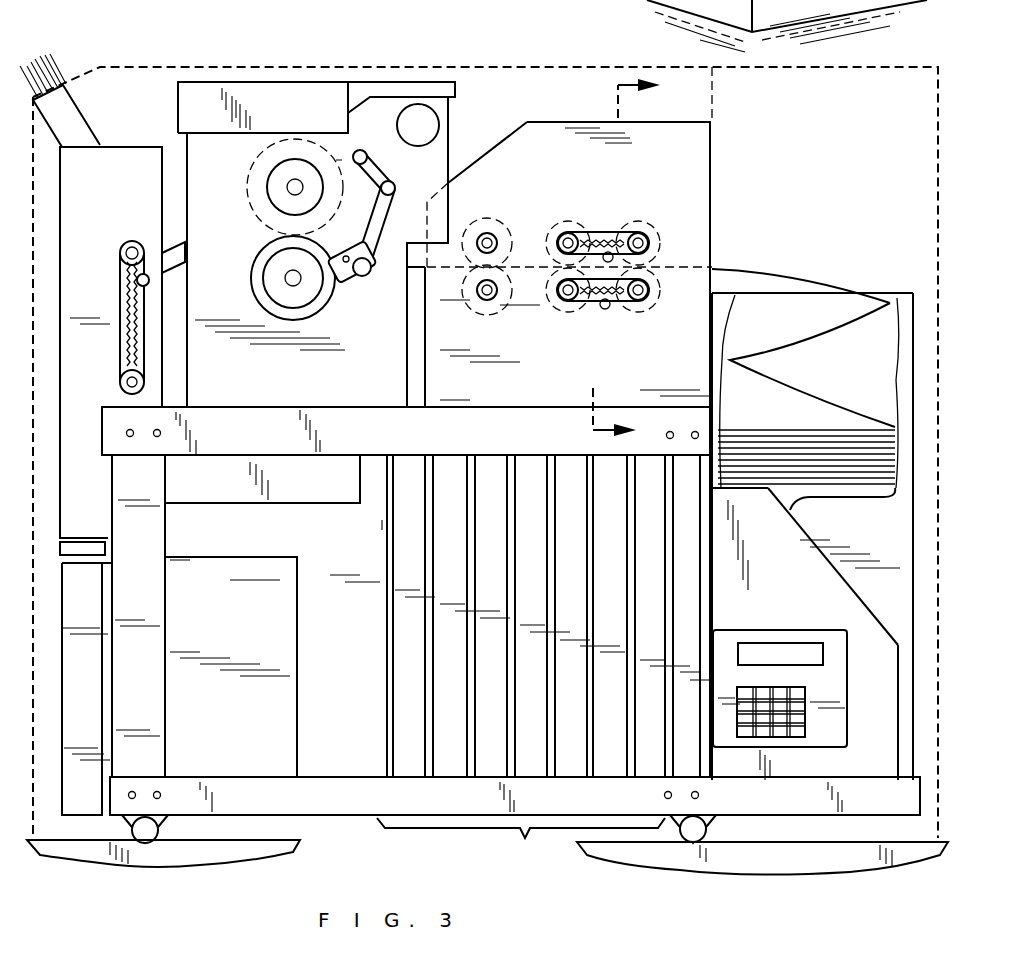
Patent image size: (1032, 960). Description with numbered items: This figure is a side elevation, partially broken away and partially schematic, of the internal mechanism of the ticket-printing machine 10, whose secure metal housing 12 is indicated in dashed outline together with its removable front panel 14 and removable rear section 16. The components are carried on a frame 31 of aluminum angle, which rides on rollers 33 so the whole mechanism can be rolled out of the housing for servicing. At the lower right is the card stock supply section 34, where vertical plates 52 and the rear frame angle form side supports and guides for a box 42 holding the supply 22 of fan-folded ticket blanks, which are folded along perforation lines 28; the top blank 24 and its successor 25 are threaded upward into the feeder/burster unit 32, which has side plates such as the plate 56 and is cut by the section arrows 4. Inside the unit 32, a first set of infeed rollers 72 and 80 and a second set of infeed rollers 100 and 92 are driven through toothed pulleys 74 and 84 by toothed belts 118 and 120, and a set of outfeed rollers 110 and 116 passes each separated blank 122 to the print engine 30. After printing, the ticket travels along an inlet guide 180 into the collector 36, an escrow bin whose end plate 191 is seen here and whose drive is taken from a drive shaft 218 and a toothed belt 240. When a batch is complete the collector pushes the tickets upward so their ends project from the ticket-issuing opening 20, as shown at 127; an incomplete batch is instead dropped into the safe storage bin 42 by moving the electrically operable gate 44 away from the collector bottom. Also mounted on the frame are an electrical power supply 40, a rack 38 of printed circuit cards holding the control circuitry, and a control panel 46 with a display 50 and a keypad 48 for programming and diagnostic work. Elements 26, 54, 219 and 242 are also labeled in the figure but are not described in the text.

The machine 10 is at (942, 82).
The secure metal housing 12 is at (550, 66).
The removable front panel 14 is at (32, 672).
The removable rear section 16 is at (880, 66).
The ticket-issuing opening 20 is at (63, 85).
The supply of fan-folded ticket blanks 22 is at (902, 467).
The top blank 24 is at (797, 280).
The succeeding blank 25 is at (822, 337).
The sheet fold 26 is at (838, 408).
The perforation lines 28 is at (735, 348).
The print engine 30 is at (375, 72).
The frame 31 is at (148, 483).
The feeder/burster unit 32 is at (537, 110).
The rollers 33 is at (160, 838).
The card stock supply section 34 is at (847, 138).
The collector compartment 36 is at (133, 122).
The rack of printed circuit cards 38 is at (437, 660).
The electrical power supply 40 is at (233, 631).
The box 42 is at (62, 752).
The electrically-operable gate 44 is at (110, 548).
The control panel 46 is at (765, 628).
The keypad 48 is at (805, 707).
The display 50 is at (802, 643).
The vertical plates 52 is at (818, 538).
The housing partition 54 is at (712, 97).
The side plate 56 is at (687, 167).
The infeed roller 72 is at (640, 222).
The toothed pulley 74 is at (642, 237).
The infeed roller 80 is at (636, 313).
The toothed pulley 84 is at (643, 298).
The infeed roller 92 is at (568, 283).
The infeed roller 100 is at (567, 220).
The outfeed roller 110 is at (507, 303).
The outfeed roller 116 is at (497, 225).
The first toothed belt 118 is at (603, 232).
The toothed belt 120 is at (597, 301).
The blank 122 is at (453, 267).
The printed ticket ends 127 is at (35, 64).
The inlet guide 180 is at (178, 238).
The end plate 191 is at (110, 201).
The drive shaft 218 is at (123, 378).
The belt tensioner 219 is at (143, 388).
The toothed belt 240 is at (123, 357).
The upper pulley 242 is at (132, 248).
The section line 4- 4 is at (635, 262).